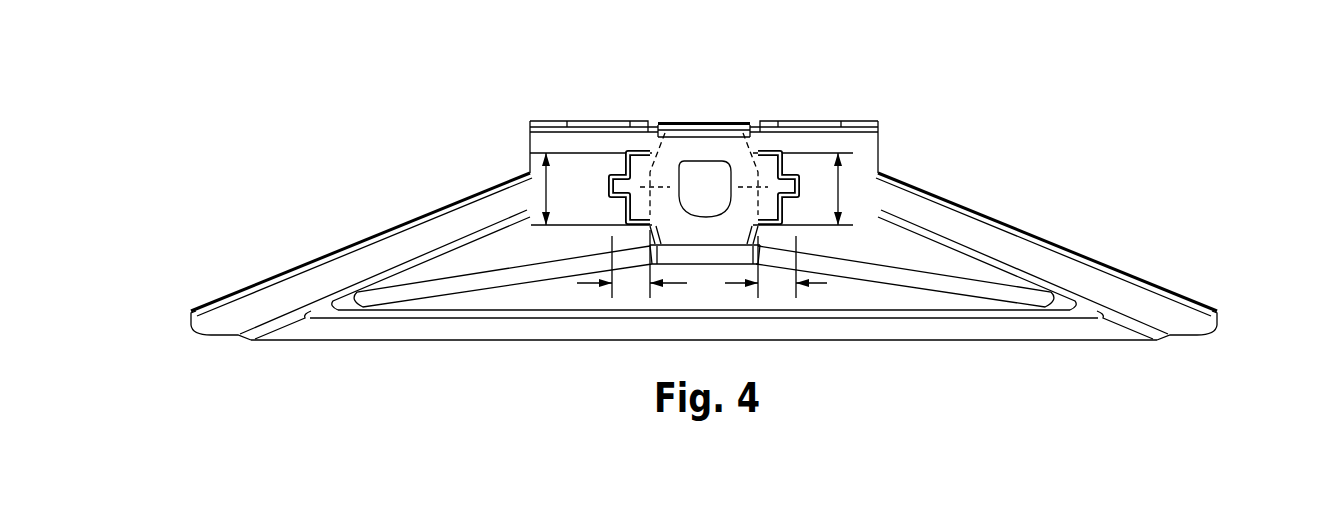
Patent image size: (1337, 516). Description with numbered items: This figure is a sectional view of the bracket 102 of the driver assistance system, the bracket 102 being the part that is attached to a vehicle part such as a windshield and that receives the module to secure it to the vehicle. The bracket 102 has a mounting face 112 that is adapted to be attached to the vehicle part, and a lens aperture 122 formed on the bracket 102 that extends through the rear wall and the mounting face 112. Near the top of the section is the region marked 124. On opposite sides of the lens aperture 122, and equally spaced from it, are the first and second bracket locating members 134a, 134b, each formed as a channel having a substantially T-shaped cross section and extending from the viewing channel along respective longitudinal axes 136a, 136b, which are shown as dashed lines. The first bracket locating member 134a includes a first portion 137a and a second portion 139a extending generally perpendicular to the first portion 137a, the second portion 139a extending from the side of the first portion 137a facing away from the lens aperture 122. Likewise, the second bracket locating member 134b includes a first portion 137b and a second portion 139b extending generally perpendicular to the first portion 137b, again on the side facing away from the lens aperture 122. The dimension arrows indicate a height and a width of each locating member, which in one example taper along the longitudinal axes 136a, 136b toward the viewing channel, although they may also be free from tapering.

The bracket 102 is at (704, 230).
The mounting face 112 is at (992, 243).
The lens aperture 122 is at (708, 175).
The top mounting bar 124 is at (686, 96).
The first bracket locating member 134a is at (600, 175).
The second bracket locating member 134b is at (806, 170).
The longitudinal axis 136a is at (663, 120).
The longitudinal axis 136b is at (737, 116).
The first portion 137a is at (628, 216).
The first portion 137b is at (787, 217).
The second portion 139a is at (610, 196).
The second portion 139b is at (797, 190).